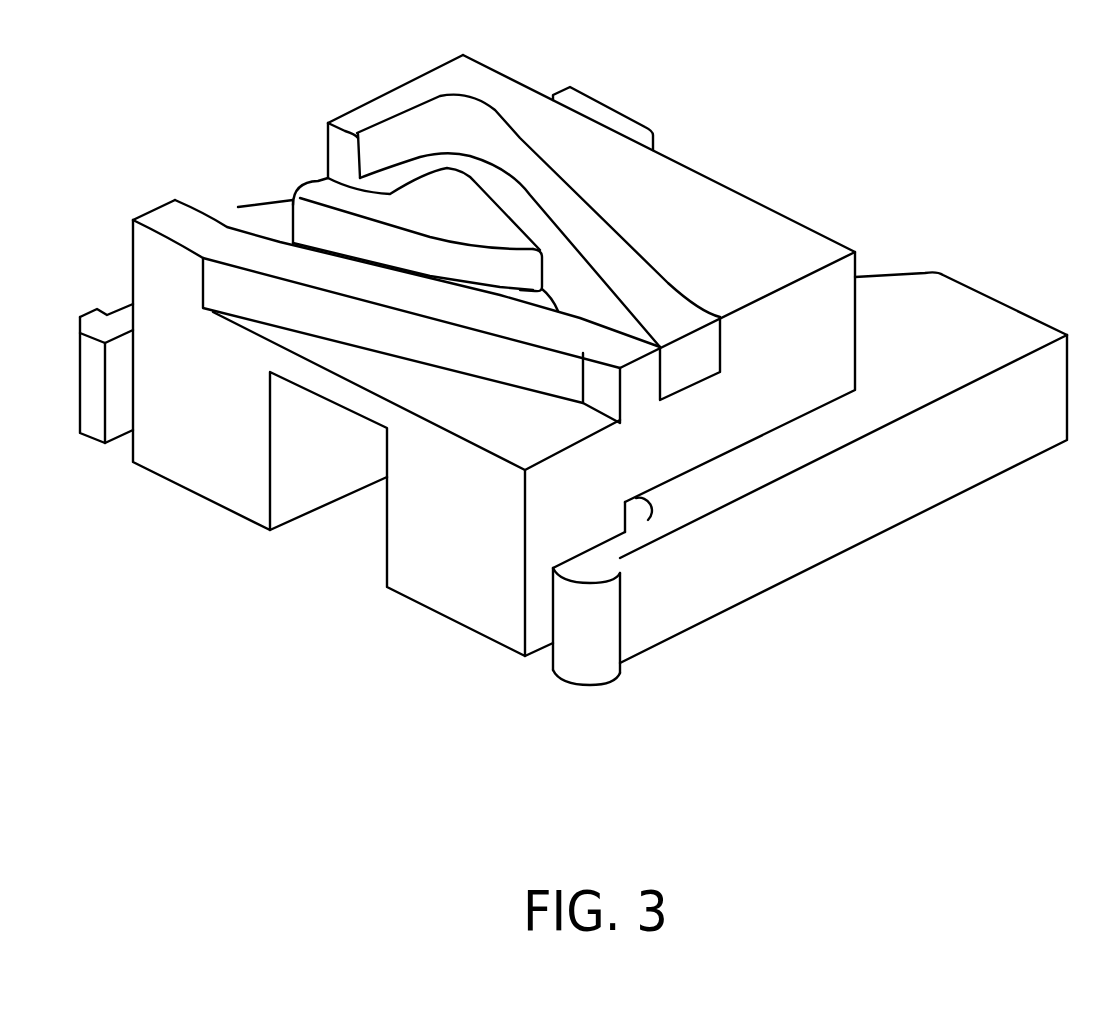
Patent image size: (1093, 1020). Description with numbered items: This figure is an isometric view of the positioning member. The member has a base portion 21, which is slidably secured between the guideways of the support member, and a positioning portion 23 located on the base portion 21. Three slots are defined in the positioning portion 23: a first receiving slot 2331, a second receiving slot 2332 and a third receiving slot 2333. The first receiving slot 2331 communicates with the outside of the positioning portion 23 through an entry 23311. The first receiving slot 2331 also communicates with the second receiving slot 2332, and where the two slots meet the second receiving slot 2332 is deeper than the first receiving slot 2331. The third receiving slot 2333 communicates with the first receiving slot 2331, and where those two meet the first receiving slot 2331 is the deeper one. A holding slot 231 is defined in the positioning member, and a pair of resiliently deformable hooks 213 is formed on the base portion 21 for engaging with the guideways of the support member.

The base portion 21 is at (948, 317).
The resiliently deformable hooks 213 is at (595, 640).
The positioning portion 23 is at (788, 377).
The holding slot 231 is at (345, 527).
The first receiving slot 2331 is at (530, 217).
The second receiving slot 2332 is at (387, 185).
The third receiving slot 2333 is at (455, 262).
The entry 23311 is at (690, 378).